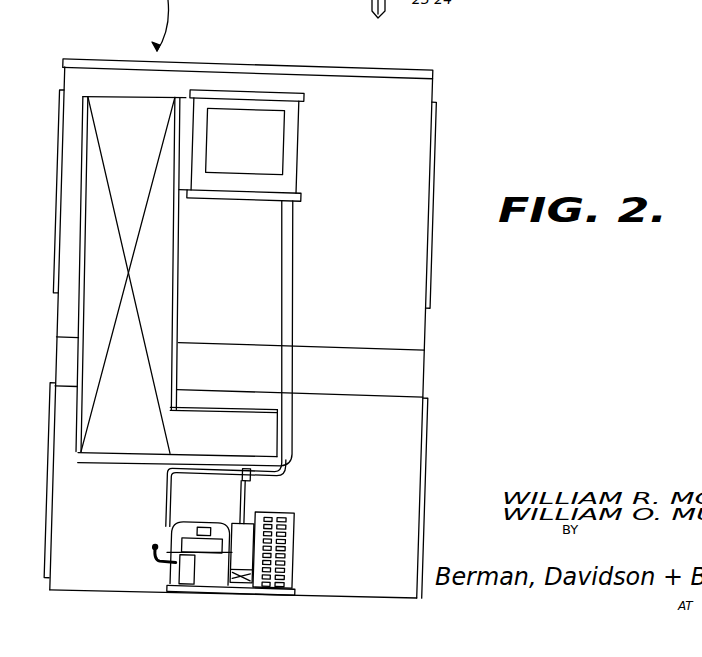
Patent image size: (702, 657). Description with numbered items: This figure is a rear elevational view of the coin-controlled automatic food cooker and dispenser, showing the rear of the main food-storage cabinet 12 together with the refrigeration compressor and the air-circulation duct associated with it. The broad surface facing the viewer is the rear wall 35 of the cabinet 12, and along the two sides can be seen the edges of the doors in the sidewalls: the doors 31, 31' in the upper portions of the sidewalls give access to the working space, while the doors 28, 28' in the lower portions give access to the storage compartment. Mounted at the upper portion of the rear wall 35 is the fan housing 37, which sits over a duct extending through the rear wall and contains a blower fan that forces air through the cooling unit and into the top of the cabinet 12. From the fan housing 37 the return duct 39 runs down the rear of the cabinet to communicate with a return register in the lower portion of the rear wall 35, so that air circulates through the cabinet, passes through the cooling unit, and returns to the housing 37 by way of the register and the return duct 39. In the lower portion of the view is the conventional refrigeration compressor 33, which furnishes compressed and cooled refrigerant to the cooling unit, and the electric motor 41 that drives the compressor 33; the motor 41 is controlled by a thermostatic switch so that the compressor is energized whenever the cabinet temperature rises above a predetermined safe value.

The main food-storage cabinet 12 is at (64, 66).
The rear wall 35 is at (407, 105).
The door 31 is at (45, 191).
The door 31' is at (454, 205).
The door 28 is at (36, 480).
The door 28' is at (442, 498).
The return duct 39 is at (97, 293).
The fan housing 37 is at (300, 148).
The refrigeration compressor 33 is at (293, 546).
The electric motor 41 is at (185, 573).